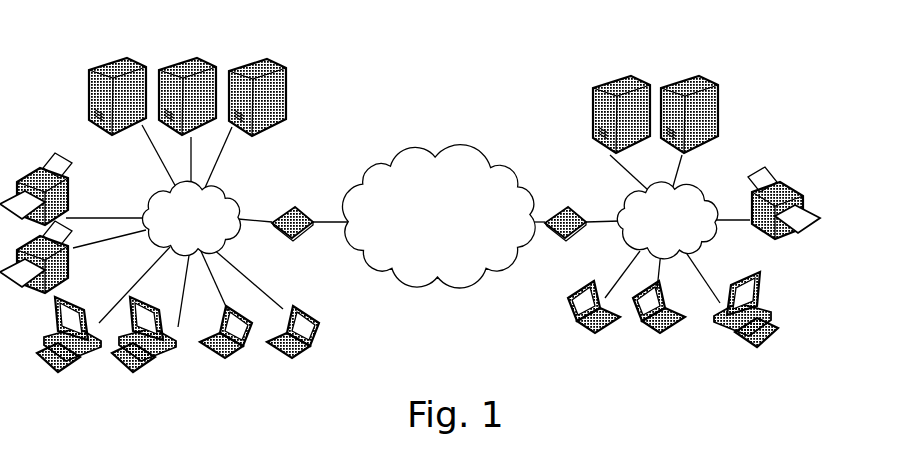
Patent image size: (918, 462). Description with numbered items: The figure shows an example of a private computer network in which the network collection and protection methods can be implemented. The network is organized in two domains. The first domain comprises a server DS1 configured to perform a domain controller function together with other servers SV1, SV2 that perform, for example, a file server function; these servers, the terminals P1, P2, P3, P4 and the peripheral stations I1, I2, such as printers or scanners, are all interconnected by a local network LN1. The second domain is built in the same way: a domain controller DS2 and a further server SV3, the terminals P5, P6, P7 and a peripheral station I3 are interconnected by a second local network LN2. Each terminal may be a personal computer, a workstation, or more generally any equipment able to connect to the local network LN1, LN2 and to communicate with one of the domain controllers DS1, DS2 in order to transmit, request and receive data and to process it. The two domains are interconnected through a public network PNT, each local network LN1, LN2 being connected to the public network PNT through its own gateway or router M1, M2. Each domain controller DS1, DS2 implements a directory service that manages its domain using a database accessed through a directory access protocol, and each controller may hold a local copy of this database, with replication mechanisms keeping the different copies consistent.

The server SV1 is at (107, 58).
The domain controller server DS1 is at (177, 57).
The server SV2 is at (253, 58).
The domain controller server DS2 is at (612, 73).
The server SV3 is at (685, 73).
The peripheral station I1 is at (28, 165).
The peripheral station I2 is at (28, 292).
The peripheral station I3 is at (792, 176).
The gateway or router M1 is at (298, 205).
The gateway or router M2 is at (562, 206).
The local network LN1 is at (214, 231).
The local network LN2 is at (696, 231).
The public network PNT is at (466, 230).
The terminal P1 is at (88, 368).
The terminal P2 is at (158, 368).
The terminal P3 is at (238, 360).
The terminal P4 is at (300, 362).
The terminal P5 is at (586, 342).
The terminal P6 is at (650, 344).
The terminal P7 is at (731, 349).